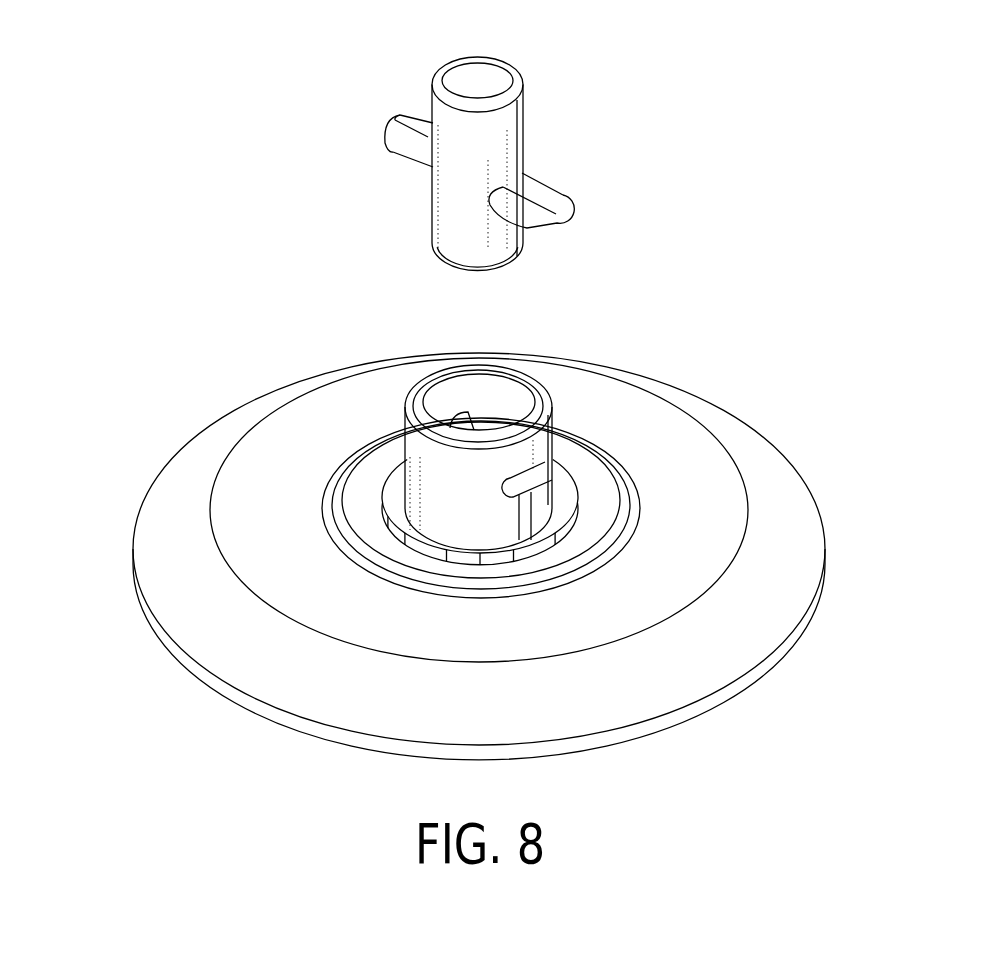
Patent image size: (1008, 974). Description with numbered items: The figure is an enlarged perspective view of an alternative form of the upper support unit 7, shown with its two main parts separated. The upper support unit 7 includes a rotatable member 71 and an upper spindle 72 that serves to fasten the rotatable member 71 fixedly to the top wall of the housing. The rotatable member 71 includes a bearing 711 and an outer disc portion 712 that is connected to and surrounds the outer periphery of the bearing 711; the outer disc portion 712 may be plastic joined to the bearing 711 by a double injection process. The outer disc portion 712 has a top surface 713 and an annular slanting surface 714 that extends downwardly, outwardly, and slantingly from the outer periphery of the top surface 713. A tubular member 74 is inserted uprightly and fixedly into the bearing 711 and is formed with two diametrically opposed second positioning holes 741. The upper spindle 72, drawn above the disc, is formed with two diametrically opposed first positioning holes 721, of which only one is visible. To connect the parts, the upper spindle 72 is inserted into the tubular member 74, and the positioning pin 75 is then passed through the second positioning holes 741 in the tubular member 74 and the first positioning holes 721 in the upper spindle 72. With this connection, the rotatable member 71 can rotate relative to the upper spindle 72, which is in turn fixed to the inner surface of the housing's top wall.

The upper support unit 7 is at (733, 131).
The rotatable member 71 is at (678, 455).
The bearing 711 is at (593, 490).
The outer disc portion 712 is at (750, 440).
The top surface 713 is at (272, 452).
The annular slanting surface 714 is at (177, 485).
The upper spindle 72 is at (502, 125).
The first positioning holes 721 is at (540, 187).
The tubular member 74 is at (432, 376).
The second positioning holes 741 is at (547, 458).
The positioning pin 75 is at (560, 218).